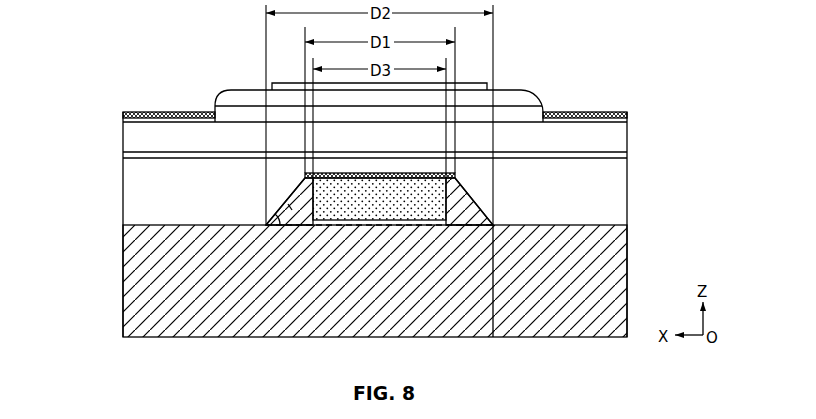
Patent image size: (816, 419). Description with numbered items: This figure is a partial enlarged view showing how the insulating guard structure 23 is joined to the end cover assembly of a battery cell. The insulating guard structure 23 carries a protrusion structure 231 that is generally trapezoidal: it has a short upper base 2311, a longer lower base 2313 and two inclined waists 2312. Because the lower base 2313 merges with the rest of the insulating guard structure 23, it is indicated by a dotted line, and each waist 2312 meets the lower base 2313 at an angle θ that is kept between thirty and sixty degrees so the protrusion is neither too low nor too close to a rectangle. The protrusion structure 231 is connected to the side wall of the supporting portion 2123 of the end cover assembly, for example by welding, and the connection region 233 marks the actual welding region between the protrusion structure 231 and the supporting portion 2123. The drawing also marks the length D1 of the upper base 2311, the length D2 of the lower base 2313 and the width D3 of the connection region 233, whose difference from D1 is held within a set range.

The insulating guard structure 23 is at (560, 287).
The protrusion structure 231 is at (364, 153).
The upper base 2311 is at (413, 172).
The waist 2312 is at (285, 212).
The lower base 2313 is at (462, 225).
The supporting portion 2123 is at (567, 193).
The connection region 233 is at (337, 190).